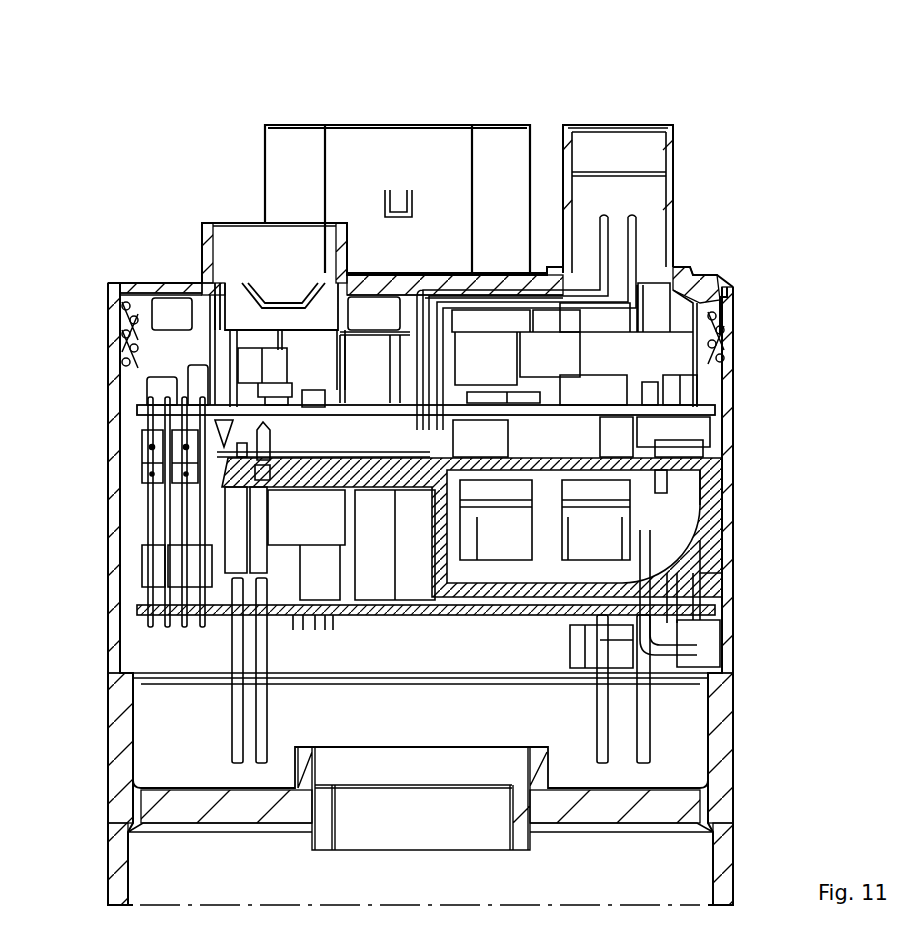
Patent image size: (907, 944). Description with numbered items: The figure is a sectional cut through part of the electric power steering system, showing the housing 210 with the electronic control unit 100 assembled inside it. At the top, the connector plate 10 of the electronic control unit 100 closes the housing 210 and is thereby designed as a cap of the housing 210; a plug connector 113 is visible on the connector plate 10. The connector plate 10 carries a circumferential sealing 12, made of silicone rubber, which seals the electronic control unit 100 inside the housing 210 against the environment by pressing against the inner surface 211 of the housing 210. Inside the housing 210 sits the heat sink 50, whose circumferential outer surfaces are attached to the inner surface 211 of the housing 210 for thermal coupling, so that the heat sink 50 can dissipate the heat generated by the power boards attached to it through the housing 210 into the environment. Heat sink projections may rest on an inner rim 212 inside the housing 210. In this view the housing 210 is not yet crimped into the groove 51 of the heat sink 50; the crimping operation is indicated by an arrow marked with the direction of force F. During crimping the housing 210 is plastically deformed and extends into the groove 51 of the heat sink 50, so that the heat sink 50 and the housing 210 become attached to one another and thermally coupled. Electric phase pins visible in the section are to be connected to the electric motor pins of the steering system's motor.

The electronic control unit 100 is at (635, 103).
The connector 113 is at (668, 160).
The connector plate 10 is at (688, 270).
The sealing 12 is at (718, 330).
The groove 51 is at (720, 508).
The direction of force F is at (745, 520).
The heat sink 50 is at (708, 545).
The inner rim 212 is at (183, 702).
The inner surface 211 is at (420, 710).
The housing 210 is at (733, 790).